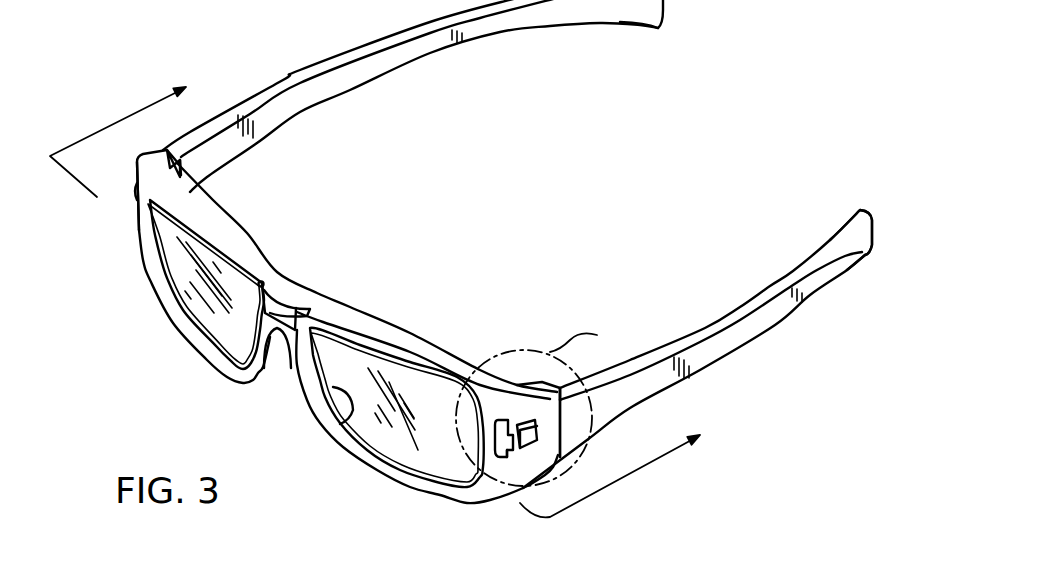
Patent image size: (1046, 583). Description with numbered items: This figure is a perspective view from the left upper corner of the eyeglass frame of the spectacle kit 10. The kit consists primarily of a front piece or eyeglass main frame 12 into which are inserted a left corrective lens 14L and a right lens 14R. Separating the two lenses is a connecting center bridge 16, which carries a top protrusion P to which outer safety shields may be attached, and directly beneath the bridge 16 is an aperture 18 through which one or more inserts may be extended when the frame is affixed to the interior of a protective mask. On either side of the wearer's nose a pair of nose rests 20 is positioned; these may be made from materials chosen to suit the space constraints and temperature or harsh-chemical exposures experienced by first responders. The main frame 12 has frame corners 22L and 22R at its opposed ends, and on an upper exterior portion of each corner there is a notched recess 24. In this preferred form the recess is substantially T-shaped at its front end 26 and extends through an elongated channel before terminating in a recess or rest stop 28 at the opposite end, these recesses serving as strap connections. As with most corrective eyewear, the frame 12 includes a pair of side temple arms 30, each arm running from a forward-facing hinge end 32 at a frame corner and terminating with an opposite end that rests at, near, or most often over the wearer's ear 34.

The spectacle kit 10 is at (466, 258).
The eyeglass main frame 12 is at (318, 326).
The left corrective lens 14L is at (240, 353).
The right lens 14R is at (357, 368).
The connecting center bridge 16 is at (273, 272).
The aperture 18 is at (312, 310).
The top protrusion P is at (283, 302).
The nose rests 20 is at (340, 393).
The left frame corner 22L is at (143, 197).
The right frame corner 22R is at (583, 457).
The notched recess 24 is at (520, 423).
The front end 26 is at (137, 190).
The rest stop 28 is at (537, 422).
The side temple arms 30 is at (408, 0).
The hinge end 32 is at (197, 173).
The ear end 34 is at (638, 13).